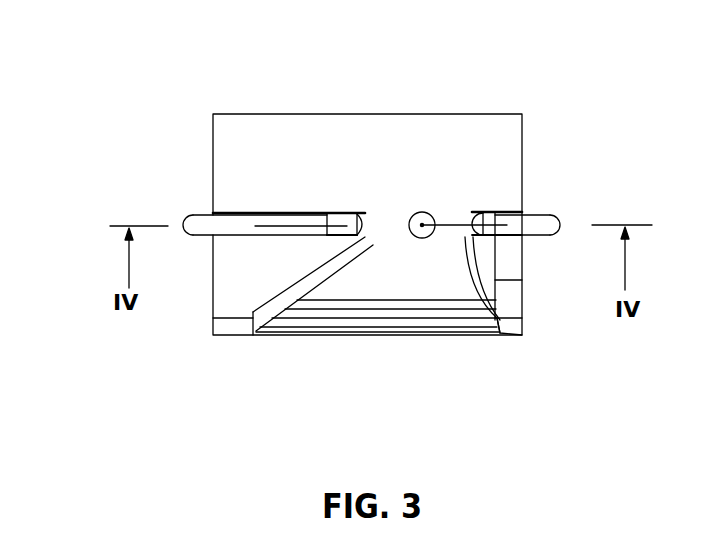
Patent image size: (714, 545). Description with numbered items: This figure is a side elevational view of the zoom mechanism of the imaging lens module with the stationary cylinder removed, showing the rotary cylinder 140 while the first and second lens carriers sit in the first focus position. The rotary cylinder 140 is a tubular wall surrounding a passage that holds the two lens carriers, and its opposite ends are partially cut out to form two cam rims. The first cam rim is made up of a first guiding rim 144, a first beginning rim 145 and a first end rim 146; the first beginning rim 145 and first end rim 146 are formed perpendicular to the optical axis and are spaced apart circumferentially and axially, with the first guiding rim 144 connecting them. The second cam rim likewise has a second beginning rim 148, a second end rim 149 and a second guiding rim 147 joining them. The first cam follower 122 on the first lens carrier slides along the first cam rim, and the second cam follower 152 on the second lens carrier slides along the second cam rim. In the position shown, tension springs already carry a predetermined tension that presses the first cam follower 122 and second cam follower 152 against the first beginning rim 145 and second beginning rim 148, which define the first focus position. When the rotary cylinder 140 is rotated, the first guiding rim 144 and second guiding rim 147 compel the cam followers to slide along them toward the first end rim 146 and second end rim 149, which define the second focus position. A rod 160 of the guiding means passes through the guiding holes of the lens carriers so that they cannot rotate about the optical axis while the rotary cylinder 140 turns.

The rotary cylinder 140 is at (375, 113).
The second cam follower 152 is at (343, 225).
The rod 160 is at (205, 216).
The second beginning rim 148 is at (370, 225).
The first beginning rim 145 is at (467, 236).
The first cam follower 122 is at (490, 212).
The first guiding rim 144 is at (522, 280).
The second guiding rim 147 is at (297, 297).
The second end rim 149 is at (252, 318).
The first end rim 146 is at (508, 335).